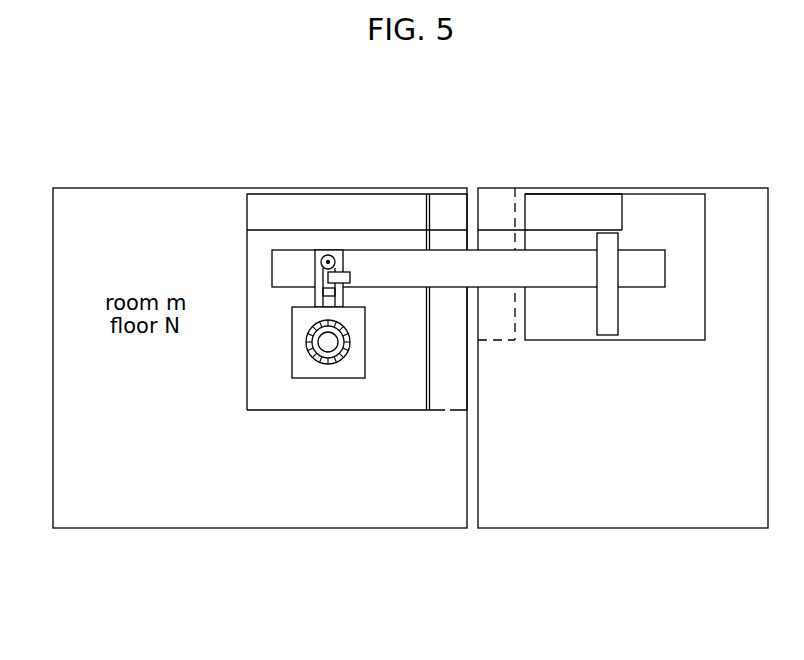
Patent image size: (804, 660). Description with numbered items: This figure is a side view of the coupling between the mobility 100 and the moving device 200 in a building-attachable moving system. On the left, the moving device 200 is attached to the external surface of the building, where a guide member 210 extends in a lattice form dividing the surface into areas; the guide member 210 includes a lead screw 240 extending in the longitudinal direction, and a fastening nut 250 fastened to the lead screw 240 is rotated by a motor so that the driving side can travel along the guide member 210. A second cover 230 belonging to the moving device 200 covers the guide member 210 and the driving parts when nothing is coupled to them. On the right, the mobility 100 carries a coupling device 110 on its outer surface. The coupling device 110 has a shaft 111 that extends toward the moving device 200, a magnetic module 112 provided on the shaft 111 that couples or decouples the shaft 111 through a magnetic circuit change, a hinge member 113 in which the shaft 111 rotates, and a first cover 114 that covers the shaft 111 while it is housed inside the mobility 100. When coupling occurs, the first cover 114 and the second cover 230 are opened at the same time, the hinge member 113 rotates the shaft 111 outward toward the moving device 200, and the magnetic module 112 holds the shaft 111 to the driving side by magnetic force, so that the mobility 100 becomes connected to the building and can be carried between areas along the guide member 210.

The mobility 100 is at (622, 544).
The coupling device 110 is at (662, 212).
The shaft 111 is at (384, 270).
The magnetic module 112 is at (329, 252).
The hinge member 113 is at (607, 250).
The first cover 114 is at (555, 212).
The moving device 200 is at (357, 352).
The guide member 210 is at (306, 352).
The second cover 230 is at (270, 212).
The lead screw 240 is at (318, 350).
The fastening nut 250 is at (343, 362).